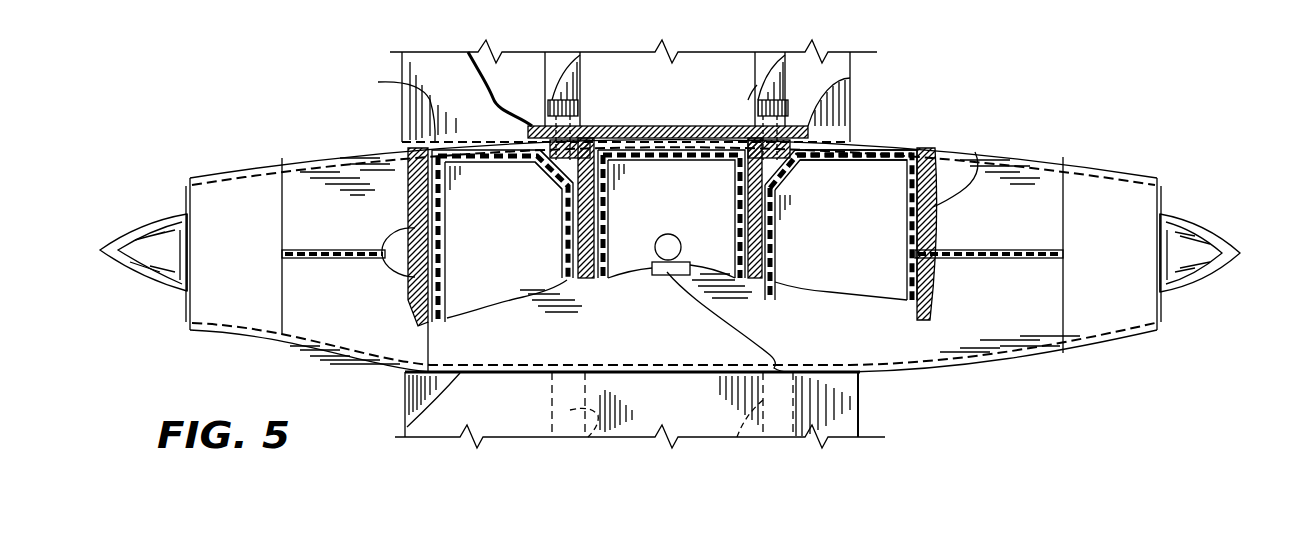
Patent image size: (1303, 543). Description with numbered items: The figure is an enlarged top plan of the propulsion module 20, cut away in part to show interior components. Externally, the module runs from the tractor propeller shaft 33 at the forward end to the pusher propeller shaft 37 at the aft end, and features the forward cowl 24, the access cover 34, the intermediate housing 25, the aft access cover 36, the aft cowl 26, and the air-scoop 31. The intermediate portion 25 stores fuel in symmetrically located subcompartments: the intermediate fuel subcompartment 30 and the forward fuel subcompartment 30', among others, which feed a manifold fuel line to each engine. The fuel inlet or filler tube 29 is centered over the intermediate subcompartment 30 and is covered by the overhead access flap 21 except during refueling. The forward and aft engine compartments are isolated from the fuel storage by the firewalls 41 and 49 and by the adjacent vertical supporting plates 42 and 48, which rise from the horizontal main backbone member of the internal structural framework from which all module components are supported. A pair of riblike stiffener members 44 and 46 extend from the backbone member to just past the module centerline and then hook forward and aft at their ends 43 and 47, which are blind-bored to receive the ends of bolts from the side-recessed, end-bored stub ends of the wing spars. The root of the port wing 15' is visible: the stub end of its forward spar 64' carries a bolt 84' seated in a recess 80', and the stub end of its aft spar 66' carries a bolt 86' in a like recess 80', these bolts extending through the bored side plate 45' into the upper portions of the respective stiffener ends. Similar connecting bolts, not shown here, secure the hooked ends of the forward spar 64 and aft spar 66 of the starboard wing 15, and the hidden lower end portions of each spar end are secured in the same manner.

The port wing 15' is at (627, 71).
The bolt 86' is at (510, 67).
The aft spar 66' is at (567, 85).
The recess 80' is at (738, 75).
The bored side plate 45' is at (626, 72).
The bolt 84' is at (730, 61).
The forward spar 64' is at (775, 80).
The aft access cover 36 is at (305, 177).
The vertical supporting plate 48 is at (408, 100).
The firewall 49 is at (353, 160).
The firewall 41 is at (933, 148).
The vertical supporting plate 42 is at (975, 152).
The hooked end of stiffener member 43 is at (862, 150).
The hooked end of stiffener member 47 is at (567, 180).
The intermediate fuel subcompartment 30 is at (661, 208).
The fuel inlet or filler tube 29 is at (667, 237).
The forward fuel subcompartment 30' is at (841, 225).
The riblike stiffener member 46 is at (570, 265).
The riblike stiffener member 44 is at (778, 247).
The pusher propeller shaft 37 is at (178, 290).
The aft cowl 26 is at (253, 290).
The air-scoop 31 is at (353, 277).
The propulsion module 20 is at (455, 382).
The intermediate housing 25 is at (407, 422).
The aft spar 66 is at (588, 418).
The forward spar 64 is at (764, 418).
The overhead access flap 21 is at (858, 385).
The starboard wing 15 is at (669, 410).
The access cover 34 is at (993, 315).
The forward cowl 24 is at (1130, 303).
The tractor propeller shaft 33 is at (1190, 295).